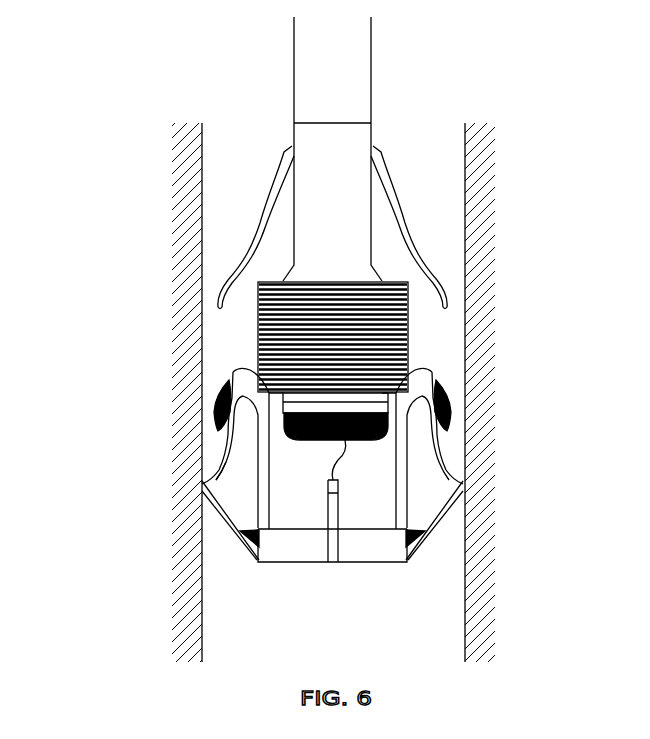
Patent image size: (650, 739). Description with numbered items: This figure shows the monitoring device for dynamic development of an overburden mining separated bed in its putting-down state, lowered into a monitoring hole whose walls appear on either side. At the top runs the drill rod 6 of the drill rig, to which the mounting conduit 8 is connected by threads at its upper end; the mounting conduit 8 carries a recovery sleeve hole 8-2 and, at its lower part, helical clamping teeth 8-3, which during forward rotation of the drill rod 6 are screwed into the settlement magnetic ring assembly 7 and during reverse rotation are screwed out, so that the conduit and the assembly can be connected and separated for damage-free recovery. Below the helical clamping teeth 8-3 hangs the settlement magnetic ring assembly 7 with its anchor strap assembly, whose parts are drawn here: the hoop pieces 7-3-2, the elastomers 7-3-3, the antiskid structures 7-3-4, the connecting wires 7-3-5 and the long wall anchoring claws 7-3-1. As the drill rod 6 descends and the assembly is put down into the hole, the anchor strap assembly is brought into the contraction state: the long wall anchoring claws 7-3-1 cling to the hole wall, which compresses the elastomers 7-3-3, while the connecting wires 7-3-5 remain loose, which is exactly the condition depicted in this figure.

The drill rod 6 is at (372, 93).
The settlement magnetic ring assembly 7 is at (378, 571).
The long wall anchoring claw 7-3-1 is at (433, 538).
The hoop piece 7-3-2 is at (240, 372).
The elastomer 7-3-3 is at (240, 529).
The antiskid structure 7-3-4 is at (450, 410).
The connecting wire 7-3-5 is at (227, 452).
The mounting conduit 8 is at (255, 195).
The recovery sleeve hole 8-2 is at (410, 226).
The helical clamping teeth 8-3 is at (408, 345).